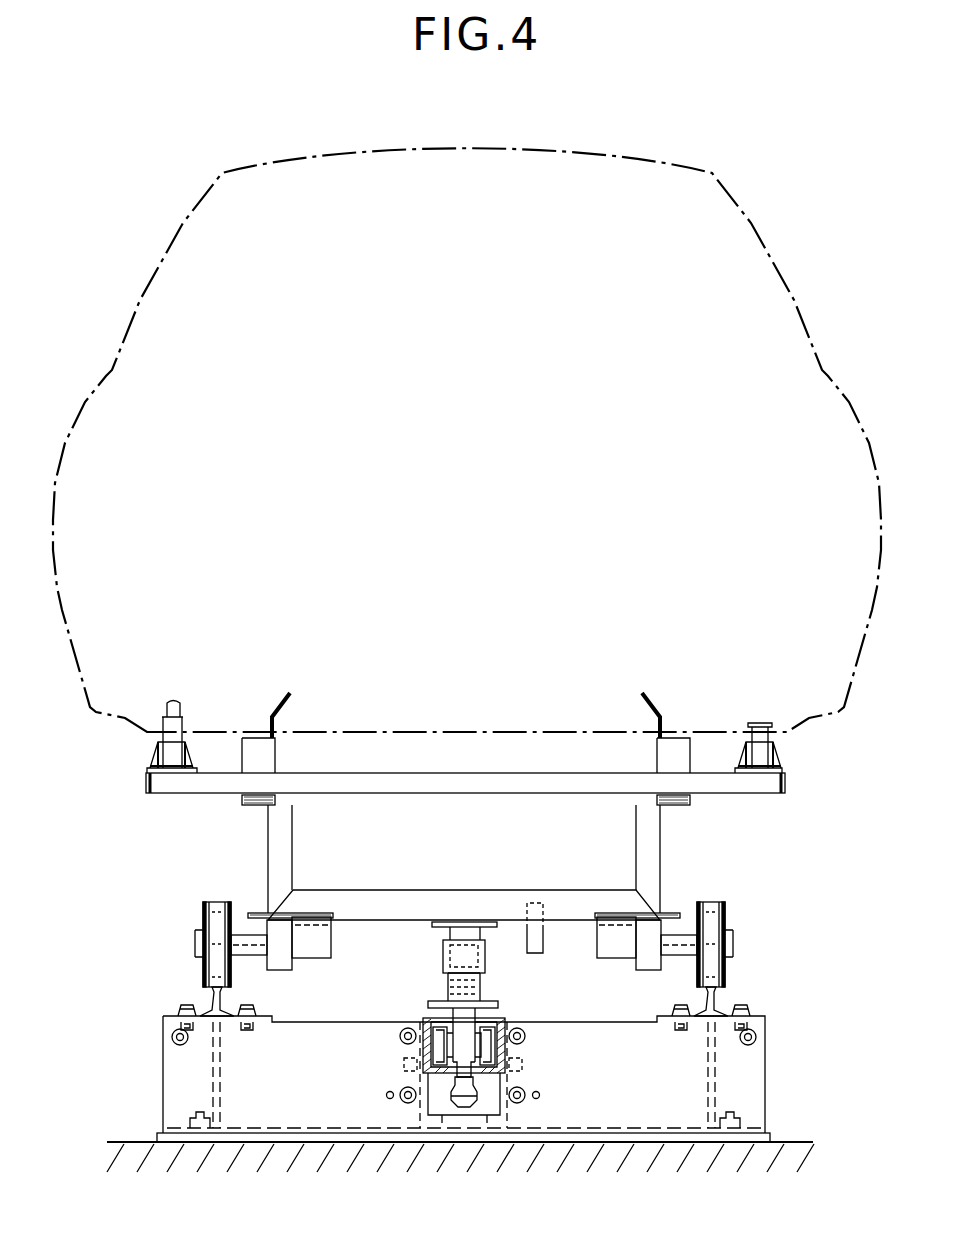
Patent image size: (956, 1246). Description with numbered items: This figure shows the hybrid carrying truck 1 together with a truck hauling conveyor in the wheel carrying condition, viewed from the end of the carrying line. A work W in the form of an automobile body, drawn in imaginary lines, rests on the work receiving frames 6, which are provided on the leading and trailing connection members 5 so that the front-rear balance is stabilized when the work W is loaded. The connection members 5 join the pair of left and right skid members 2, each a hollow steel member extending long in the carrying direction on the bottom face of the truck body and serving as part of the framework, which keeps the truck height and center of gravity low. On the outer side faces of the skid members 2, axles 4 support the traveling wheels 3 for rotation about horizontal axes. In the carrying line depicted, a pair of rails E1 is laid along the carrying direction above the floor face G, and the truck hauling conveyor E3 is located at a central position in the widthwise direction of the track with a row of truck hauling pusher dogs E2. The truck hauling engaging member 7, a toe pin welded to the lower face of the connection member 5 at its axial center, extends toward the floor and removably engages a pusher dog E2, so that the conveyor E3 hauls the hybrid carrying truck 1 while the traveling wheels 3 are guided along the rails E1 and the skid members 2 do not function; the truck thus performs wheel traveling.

The work W is at (500, 150).
The hybrid carrying truck 1 is at (688, 830).
The skid member 2 is at (283, 958).
The traveling wheel 3 is at (217, 912).
The axle 4 is at (243, 936).
The connection member 5 is at (446, 905).
The work receiving frame 6 is at (770, 794).
The truck hauling engaging member 7 is at (440, 931).
The rail E1 is at (213, 997).
The truck hauling pusher dog E2 is at (447, 986).
The truck hauling conveyor E3 is at (772, 1077).
The floor face G is at (800, 1162).